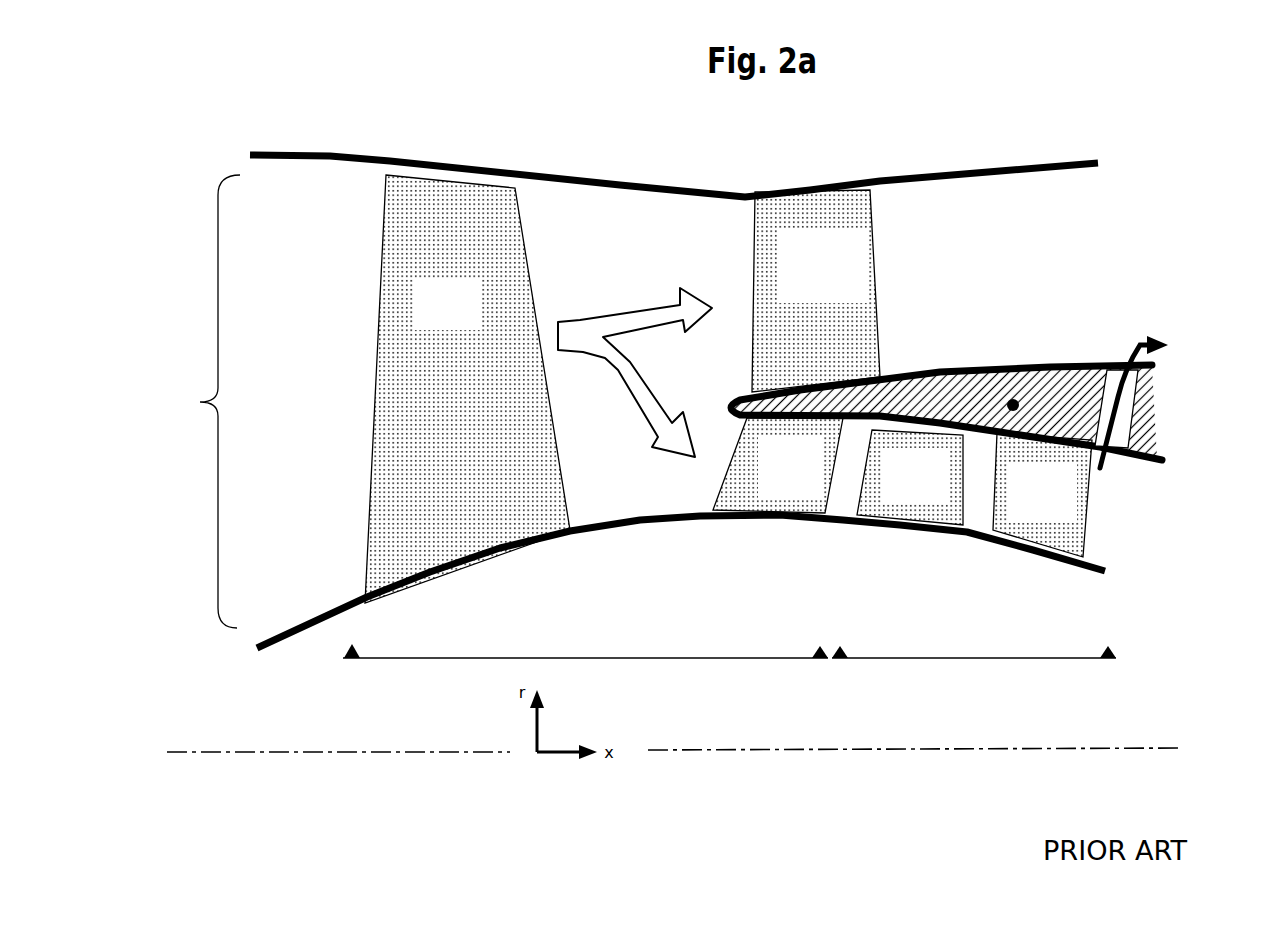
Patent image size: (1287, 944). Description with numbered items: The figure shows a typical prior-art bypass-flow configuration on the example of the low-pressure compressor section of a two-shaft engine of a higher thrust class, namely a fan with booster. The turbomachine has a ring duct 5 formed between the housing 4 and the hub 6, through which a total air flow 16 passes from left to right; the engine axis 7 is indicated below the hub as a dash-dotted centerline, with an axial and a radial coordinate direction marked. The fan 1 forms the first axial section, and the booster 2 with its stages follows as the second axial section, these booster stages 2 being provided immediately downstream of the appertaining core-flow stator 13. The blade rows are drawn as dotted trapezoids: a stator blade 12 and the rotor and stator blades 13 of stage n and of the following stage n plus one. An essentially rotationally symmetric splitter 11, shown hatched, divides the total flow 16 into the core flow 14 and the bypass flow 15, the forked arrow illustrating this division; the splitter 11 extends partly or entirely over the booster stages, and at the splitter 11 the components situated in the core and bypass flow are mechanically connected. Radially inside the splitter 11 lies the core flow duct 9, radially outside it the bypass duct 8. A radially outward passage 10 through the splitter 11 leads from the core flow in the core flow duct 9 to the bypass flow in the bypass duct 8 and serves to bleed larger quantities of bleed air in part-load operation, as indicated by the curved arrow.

The fan 1 is at (573, 657).
The booster 2 is at (930, 653).
The housing 4 is at (280, 155).
The ring duct 5 is at (196, 401).
The hub 6 is at (270, 645).
The machine axis 7 is at (783, 750).
The bypass duct 8 is at (1018, 232).
The core flow duct 9 is at (1100, 503).
The radially outward passage 10 is at (1145, 425).
The splitter 11 is at (992, 375).
The stator blade 12 is at (470, 232).
The core-flow stator 13 is at (833, 352).
The core flow 14 is at (645, 318).
The bypass flow 15 is at (652, 408).
The total air flow 16 is at (580, 335).